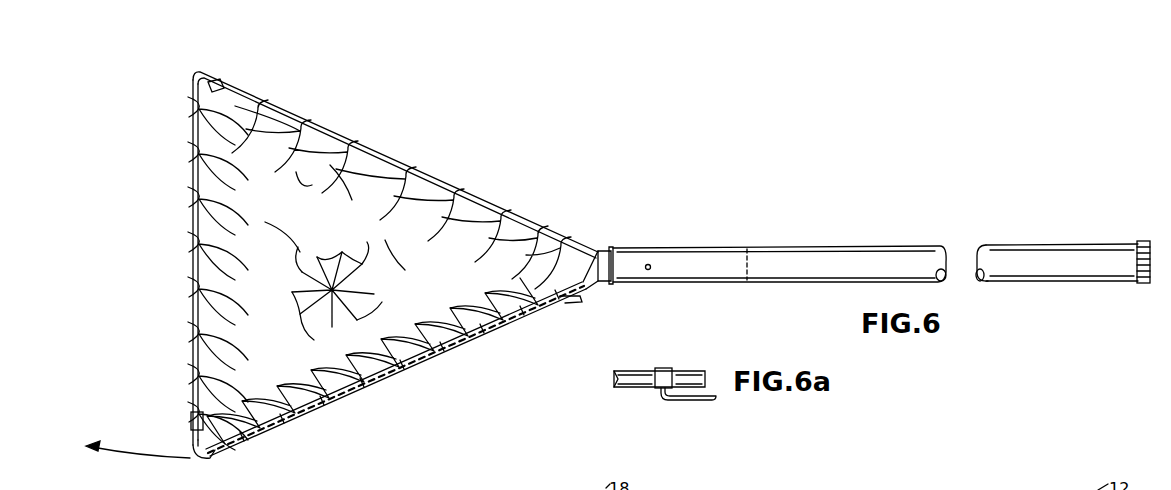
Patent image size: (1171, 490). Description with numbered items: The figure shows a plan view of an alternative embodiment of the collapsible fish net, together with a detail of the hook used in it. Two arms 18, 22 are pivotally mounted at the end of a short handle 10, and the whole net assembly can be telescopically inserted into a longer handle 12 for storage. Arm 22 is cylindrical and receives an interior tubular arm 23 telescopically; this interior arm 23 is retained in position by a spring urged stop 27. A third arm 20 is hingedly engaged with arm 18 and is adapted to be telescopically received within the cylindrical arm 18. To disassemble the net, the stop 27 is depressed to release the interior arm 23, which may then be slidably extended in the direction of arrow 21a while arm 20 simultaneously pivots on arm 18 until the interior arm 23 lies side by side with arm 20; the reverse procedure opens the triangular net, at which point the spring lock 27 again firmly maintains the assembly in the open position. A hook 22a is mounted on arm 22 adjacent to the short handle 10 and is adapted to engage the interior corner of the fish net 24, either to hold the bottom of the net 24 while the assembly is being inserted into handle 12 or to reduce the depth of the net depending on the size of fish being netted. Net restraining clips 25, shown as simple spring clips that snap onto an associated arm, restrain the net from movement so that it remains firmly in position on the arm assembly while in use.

In FIG. 6, the short handle 10 is at (635, 255).
In FIG. 6, the handle 12 is at (797, 250).
In FIG. 6, the arm 18 is at (421, 172).
In FIG. 6, the arm 20 is at (192, 272).
In FIG. 6, the arrow 21a is at (120, 452).
In FIG. 6, the arm 22 is at (597, 288).
In FIG. 6A, the arm 22 is at (697, 371).
In FIG. 6, the hook 22a is at (580, 300).
In FIG. 6A, the hook 22a is at (696, 402).
In FIG. 6, the interior tubular arm 23 is at (212, 458).
In FIG. 6, the fish net 24 is at (295, 280).
In FIG. 6, the net restraining clips 25 is at (215, 80).
In FIG. 6, the spring urged stop 27 is at (538, 322).